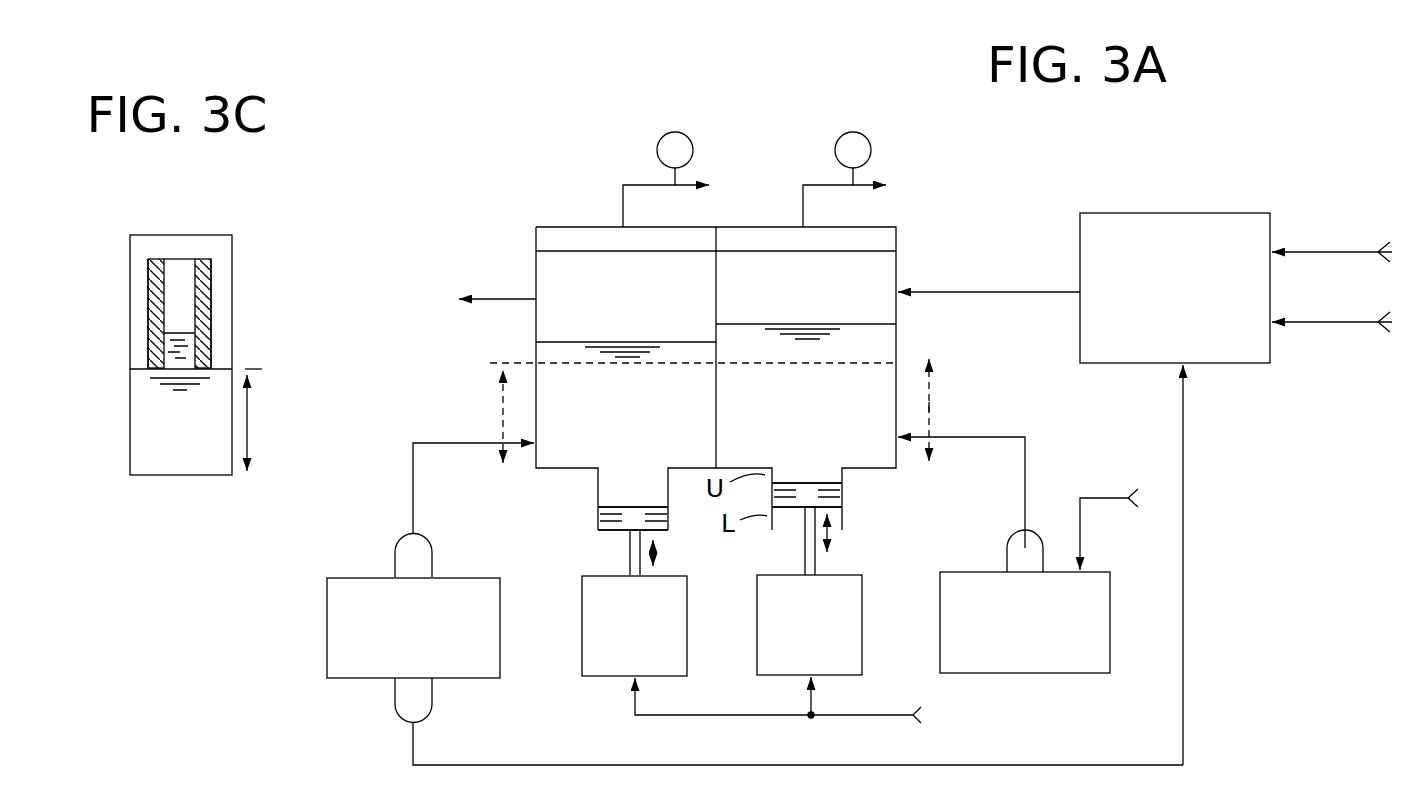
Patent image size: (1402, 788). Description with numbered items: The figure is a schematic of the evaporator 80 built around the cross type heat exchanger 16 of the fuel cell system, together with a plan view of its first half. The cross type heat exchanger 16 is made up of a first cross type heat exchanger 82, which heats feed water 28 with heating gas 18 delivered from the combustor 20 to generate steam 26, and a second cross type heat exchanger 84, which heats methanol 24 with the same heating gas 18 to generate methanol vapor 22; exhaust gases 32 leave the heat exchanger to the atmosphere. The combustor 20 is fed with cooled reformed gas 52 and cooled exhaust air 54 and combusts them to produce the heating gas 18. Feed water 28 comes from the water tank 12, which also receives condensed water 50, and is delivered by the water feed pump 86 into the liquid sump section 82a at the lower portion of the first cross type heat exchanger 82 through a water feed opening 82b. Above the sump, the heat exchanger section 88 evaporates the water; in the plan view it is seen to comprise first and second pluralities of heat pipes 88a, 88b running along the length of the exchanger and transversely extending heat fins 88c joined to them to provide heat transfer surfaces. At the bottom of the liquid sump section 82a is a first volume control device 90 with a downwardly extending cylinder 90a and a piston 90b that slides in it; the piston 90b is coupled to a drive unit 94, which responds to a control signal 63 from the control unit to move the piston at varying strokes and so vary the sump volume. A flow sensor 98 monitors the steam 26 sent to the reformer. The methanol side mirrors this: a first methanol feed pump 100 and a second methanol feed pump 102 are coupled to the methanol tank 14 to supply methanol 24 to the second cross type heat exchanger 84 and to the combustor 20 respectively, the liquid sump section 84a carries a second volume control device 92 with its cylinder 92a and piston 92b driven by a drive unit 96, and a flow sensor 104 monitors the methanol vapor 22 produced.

In FIG. 3A, the water tank 12 is at (1110, 631).
In FIG. 3A, the methanol tank 14 is at (327, 641).
In FIG. 3A, the cross type heat exchanger 16 is at (882, 216).
In FIG. 3A, the heating gas 18 is at (1001, 292).
In FIG. 3A, the combustor 20 is at (1191, 213).
In FIG. 3A, the methanol vapor 22 is at (631, 184).
In FIG. 3C, the methanol 24 is at (172, 331).
In FIG. 3A, the methanol 24 is at (458, 448).
In FIG. 3A, the steam 26 is at (806, 184).
In FIG. 3A, the feed water 28 is at (990, 437).
In FIG. 3A, the exhaust gases 32 is at (496, 299).
In FIG. 3A, the condensed water 50 is at (1094, 498).
In FIG. 3A, the cooled reformed gas 52 is at (1331, 252).
In FIG. 3A, the cooled exhaust air 54 is at (1326, 322).
In FIG. 3A, the control signal 63 is at (863, 715).
In FIG. 3A, the evaporator 80 is at (946, 216).
In FIG. 3C, the first cross type heat exchanger 82 is at (126, 262).
In FIG. 3A, the first cross type heat exchanger 82 is at (758, 227).
In FIG. 3C, the liquid sump section 82a is at (248, 393).
In FIG. 3A, the liquid sump section 82a is at (897, 441).
In FIG. 3A, the water feed opening 82b is at (929, 407).
In FIG. 3A, the second cross type heat exchanger 84 is at (568, 227).
In FIG. 3A, the liquid sump section 84a is at (503, 418).
In FIG. 3A, the water feed pump 86 is at (1007, 556).
In FIG. 3C, the heat exchanger section 88 is at (210, 318).
In FIG. 3C, the first plurality of heat pipes 88a is at (154, 262).
In FIG. 3C, the second plurality of heat pipes 88b is at (204, 264).
In FIG. 3C, the heat fins 88c is at (183, 262).
In FIG. 3A, the first volume control device 90 is at (850, 515).
In FIG. 3A, the cylinder 90a is at (843, 526).
In FIG. 3A, the piston 90b is at (843, 490).
In FIG. 3A, the second volume control device 92 is at (674, 509).
In FIG. 3A, the cylinder 92a is at (598, 531).
In FIG. 3A, the piston 92b is at (598, 518).
In FIG. 3A, the drive unit 94 is at (862, 620).
In FIG. 3A, the drive unit 96 is at (582, 636).
In FIG. 3A, the flow sensor 98 is at (869, 139).
In FIG. 3A, the first methanol feed pump 100 is at (394, 554).
In FIG. 3A, the second methanol feed pump 102 is at (394, 708).
In FIG. 3A, the flow sensor 104 is at (691, 141).